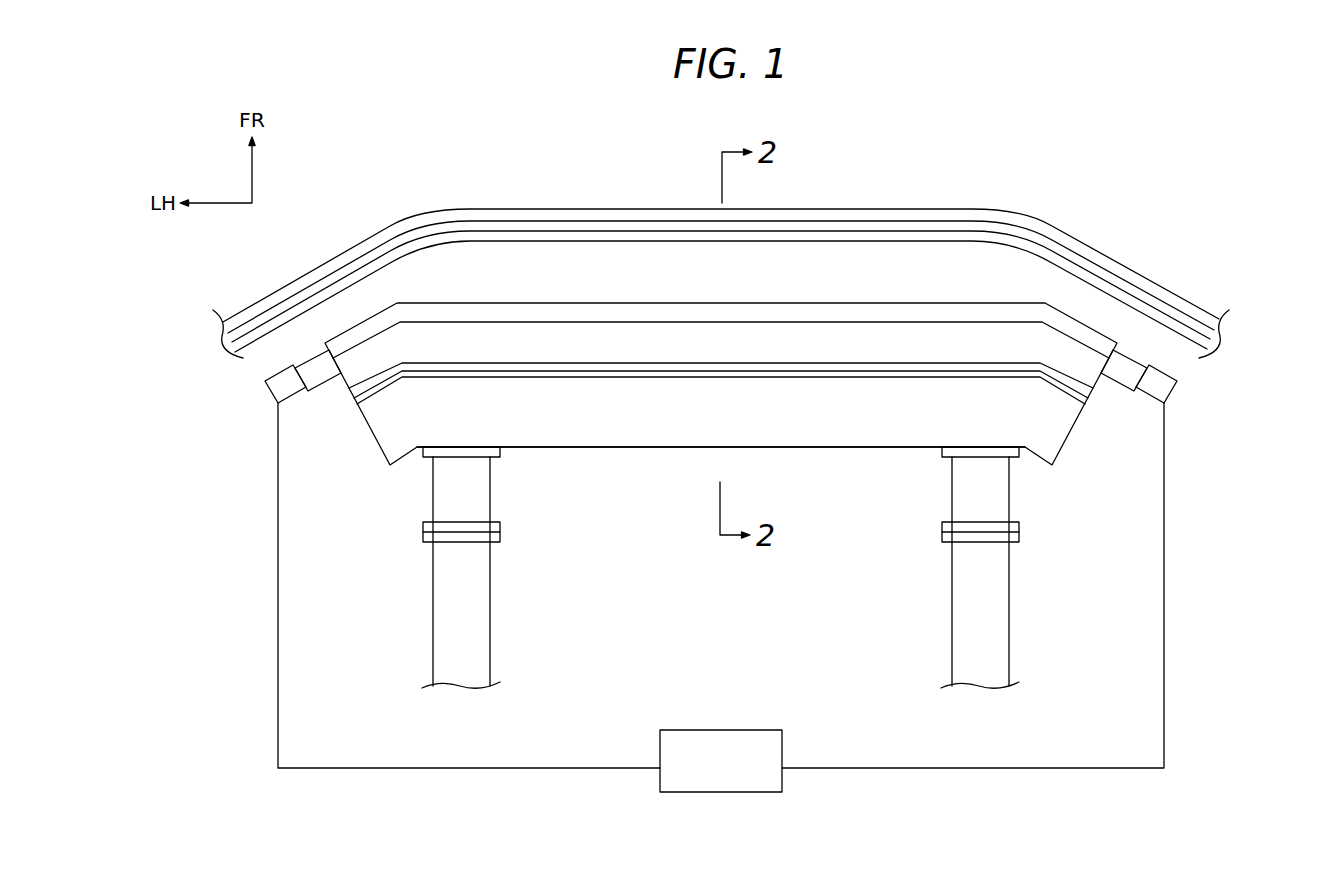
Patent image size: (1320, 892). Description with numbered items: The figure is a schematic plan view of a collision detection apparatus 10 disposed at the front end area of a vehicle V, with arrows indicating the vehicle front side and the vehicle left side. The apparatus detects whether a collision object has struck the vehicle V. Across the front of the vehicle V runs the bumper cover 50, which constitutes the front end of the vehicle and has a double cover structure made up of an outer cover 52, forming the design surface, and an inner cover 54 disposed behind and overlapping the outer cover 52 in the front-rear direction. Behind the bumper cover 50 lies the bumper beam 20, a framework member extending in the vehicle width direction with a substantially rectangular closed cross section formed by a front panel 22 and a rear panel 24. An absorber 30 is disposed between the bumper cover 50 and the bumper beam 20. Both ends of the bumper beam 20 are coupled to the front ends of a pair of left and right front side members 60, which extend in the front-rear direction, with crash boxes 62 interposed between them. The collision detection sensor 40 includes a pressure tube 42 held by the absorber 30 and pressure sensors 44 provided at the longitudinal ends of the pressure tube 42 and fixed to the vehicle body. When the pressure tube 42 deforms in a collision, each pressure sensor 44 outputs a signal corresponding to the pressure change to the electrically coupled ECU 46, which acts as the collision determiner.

The collision detection apparatus 10 is at (1035, 170).
The vehicle V is at (1103, 140).
The bumper beam 20 is at (795, 450).
The front panel 22 is at (838, 362).
The rear panel 24 is at (873, 450).
The absorber 30 is at (565, 302).
The collision detection sensor 40 is at (723, 559).
The pressure tube 42 is at (319, 393).
The pressure sensor 44 is at (265, 397).
The electronic control unit (ECU) 46 is at (722, 729).
The bumper cover 50 is at (923, 209).
The outer cover 52 is at (815, 209).
The inner cover 54 is at (873, 231).
The front side member 60 is at (433, 635).
The crash box 62 is at (433, 493).